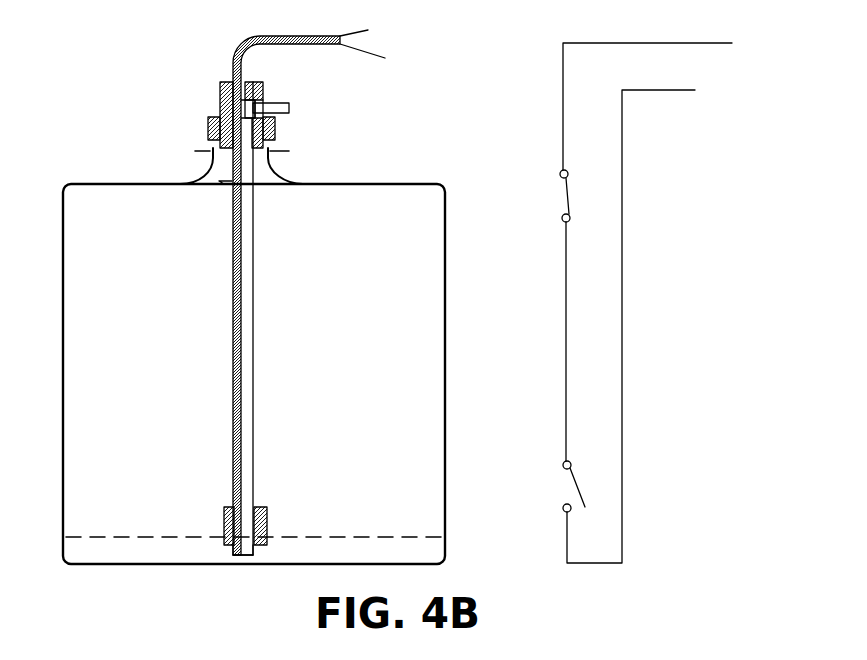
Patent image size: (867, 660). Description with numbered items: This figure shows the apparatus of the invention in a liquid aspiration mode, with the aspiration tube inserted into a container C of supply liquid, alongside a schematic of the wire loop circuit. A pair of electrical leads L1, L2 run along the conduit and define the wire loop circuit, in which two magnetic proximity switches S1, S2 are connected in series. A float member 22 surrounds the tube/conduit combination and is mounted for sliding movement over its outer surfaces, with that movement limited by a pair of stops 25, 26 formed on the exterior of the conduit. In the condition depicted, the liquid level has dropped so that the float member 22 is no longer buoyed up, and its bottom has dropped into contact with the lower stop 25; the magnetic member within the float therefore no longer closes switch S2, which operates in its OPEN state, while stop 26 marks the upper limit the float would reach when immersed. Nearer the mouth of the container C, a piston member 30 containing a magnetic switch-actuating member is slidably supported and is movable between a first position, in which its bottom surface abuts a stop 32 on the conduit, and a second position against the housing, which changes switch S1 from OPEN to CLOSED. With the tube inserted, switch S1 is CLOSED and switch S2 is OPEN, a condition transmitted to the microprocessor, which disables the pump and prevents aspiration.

The container C is at (330, 183).
The stop 32 is at (224, 185).
The piston member 30 is at (258, 148).
The stop 26 is at (233, 493).
The float member 22 is at (264, 508).
The stop 25 is at (230, 551).
The electrical lead L1 is at (367, 31).
The electrical lead L2 is at (372, 52).
The magnetic proximity switch S1 is at (552, 315).
The magnetic proximity switch S2 is at (561, 486).